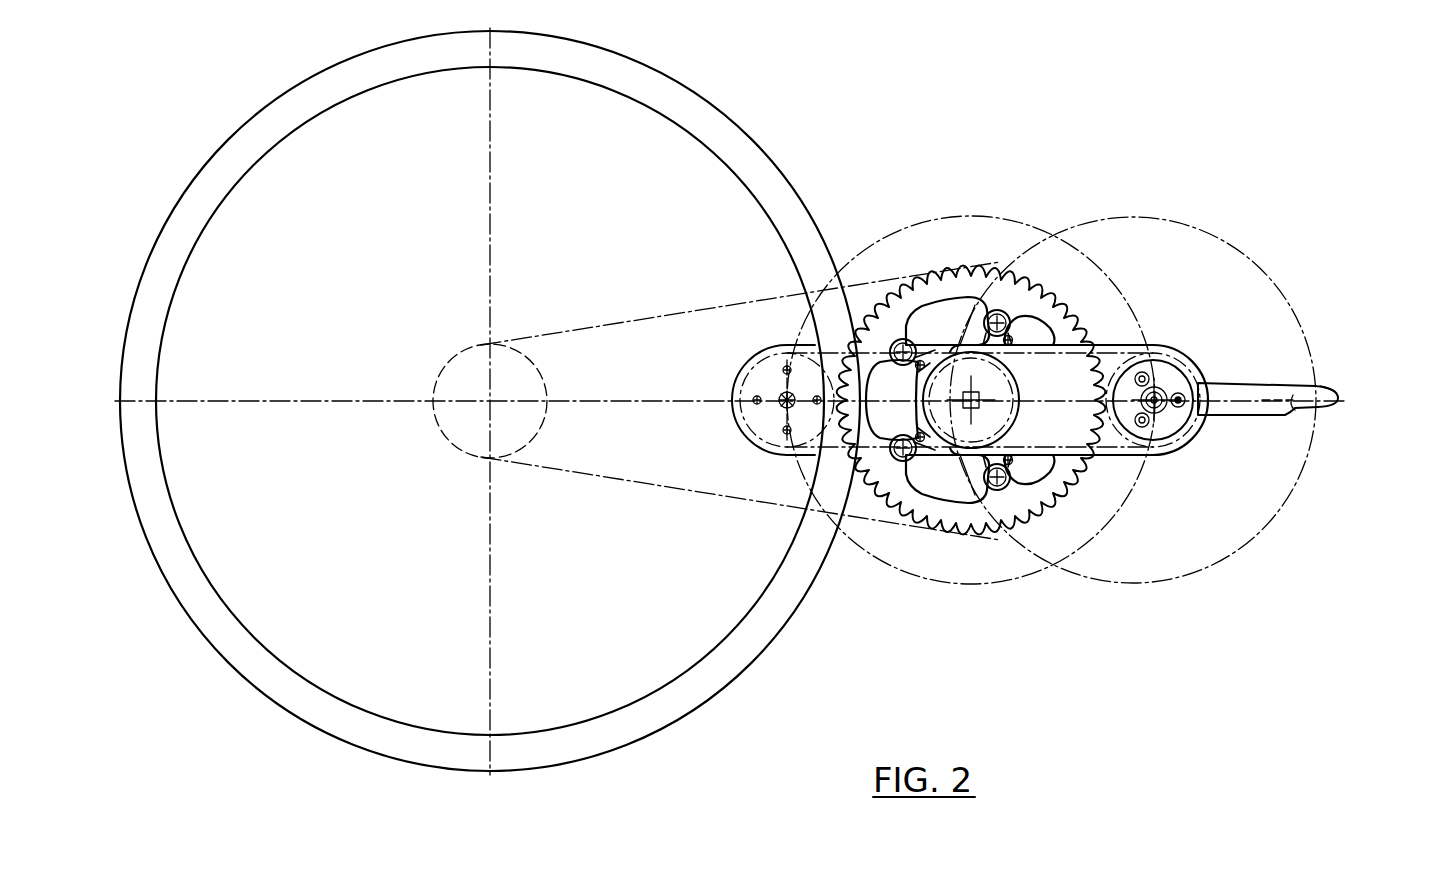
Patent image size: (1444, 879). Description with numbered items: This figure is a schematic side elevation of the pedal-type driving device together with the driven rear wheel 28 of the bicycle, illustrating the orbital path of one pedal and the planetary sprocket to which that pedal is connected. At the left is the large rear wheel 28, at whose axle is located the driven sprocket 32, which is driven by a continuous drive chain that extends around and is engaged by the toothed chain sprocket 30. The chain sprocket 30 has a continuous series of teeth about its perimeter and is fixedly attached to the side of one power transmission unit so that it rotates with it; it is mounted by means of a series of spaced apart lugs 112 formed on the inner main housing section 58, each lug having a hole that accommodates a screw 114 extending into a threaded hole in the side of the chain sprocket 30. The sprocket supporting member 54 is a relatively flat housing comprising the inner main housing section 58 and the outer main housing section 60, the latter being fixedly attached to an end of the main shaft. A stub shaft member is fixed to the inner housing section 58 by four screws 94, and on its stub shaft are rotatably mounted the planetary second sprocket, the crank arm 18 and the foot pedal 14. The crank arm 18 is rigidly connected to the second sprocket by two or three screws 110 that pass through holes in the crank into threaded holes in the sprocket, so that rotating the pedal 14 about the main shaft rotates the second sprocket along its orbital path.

The foot pedal 14 is at (1336, 400).
The crank arm 18 is at (1253, 398).
The driven rear wheel 28 is at (692, 698).
The chain sprocket 30 is at (993, 350).
The driven sprocket 32 is at (462, 362).
The sprocket supporting member 54 is at (750, 427).
The inner main housing section 58 is at (773, 428).
The outer main housing section 60 is at (1130, 381).
The screws 94 is at (919, 433).
The screws 110 is at (1180, 402).
The lugs 112 is at (920, 345).
The screw 114 is at (903, 340).